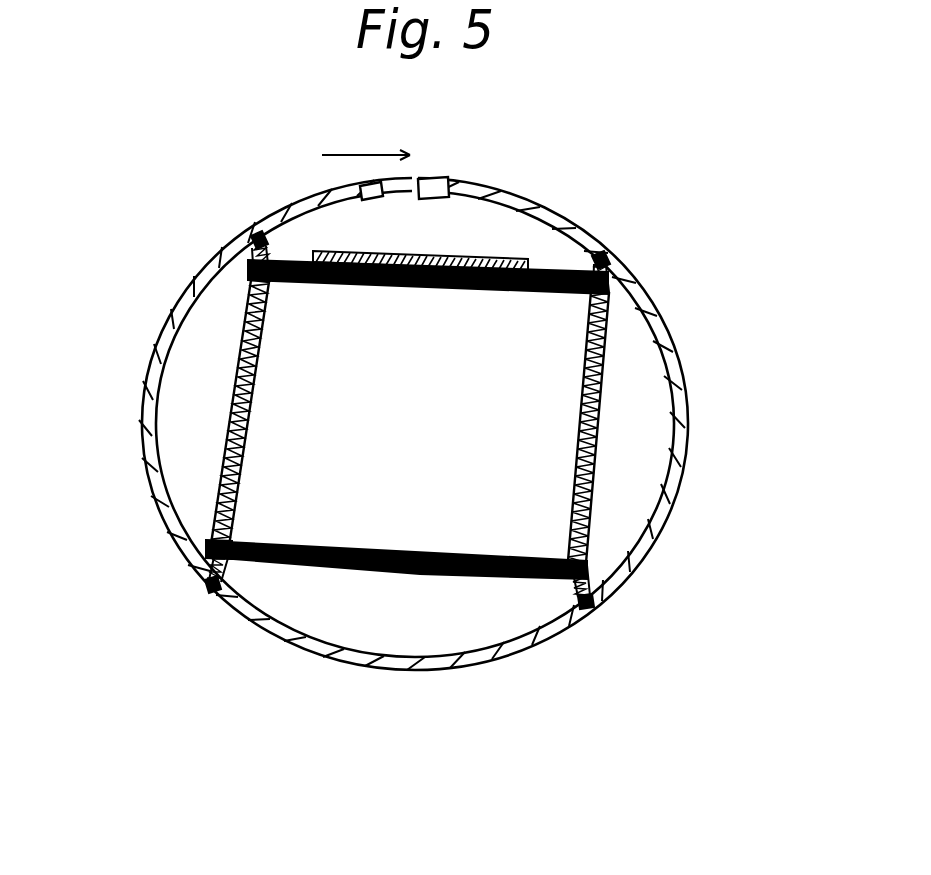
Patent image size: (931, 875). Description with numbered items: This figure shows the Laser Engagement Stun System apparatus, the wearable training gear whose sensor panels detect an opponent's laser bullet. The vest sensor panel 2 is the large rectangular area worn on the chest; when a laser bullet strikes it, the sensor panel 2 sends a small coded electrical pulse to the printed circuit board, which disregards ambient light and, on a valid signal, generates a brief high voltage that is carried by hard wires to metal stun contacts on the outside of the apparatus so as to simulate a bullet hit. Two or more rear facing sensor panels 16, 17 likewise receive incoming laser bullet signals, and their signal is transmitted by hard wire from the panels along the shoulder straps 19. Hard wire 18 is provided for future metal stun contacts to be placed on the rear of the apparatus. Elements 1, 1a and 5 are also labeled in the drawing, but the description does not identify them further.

The connecting element 1 is at (578, 267).
The ring / hoop 1a is at (693, 459).
The vest sensor panel 2 is at (289, 252).
The strip / rail 5 is at (466, 247).
The rear facing sensor panel 16 is at (284, 535).
The rear facing sensor panel 17 is at (470, 590).
The hard wire 18 is at (606, 479).
The shoulder straps 19 is at (223, 395).